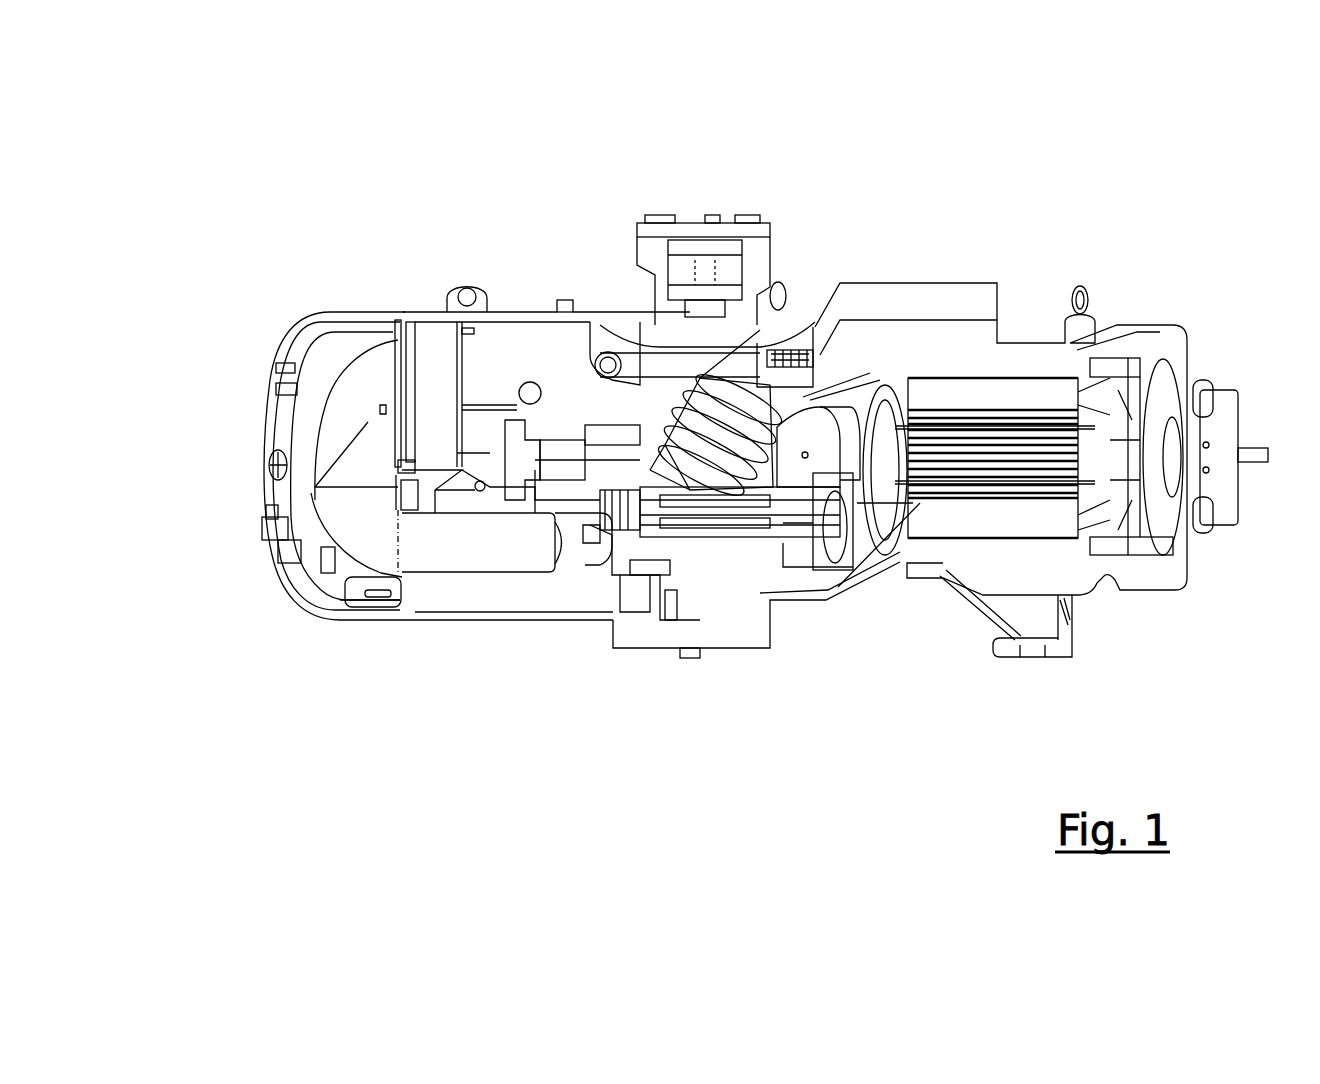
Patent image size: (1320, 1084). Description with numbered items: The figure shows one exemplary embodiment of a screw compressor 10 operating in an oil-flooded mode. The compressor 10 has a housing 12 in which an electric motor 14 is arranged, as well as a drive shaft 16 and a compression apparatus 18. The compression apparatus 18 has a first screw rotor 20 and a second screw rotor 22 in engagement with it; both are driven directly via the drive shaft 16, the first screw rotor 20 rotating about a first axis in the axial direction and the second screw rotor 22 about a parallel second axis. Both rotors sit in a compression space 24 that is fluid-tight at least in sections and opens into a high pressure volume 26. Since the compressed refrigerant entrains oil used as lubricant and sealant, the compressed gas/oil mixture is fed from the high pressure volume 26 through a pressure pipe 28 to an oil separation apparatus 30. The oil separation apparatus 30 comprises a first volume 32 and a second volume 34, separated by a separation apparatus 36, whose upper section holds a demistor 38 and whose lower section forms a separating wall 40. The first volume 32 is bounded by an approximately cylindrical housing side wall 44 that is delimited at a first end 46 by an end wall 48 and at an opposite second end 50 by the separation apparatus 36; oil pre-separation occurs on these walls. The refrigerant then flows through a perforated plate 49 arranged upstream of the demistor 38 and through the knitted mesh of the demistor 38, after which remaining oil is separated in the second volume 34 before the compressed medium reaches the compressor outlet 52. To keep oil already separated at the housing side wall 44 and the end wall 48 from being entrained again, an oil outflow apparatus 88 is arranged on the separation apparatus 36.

The screw compressor 10 is at (1168, 241).
The housing 12 is at (963, 337).
The electric motor 14 is at (963, 552).
The drive shaft 16 is at (832, 420).
The compression apparatus 18 is at (720, 520).
The first screw rotor 20 is at (723, 450).
The second screw rotor 22 is at (695, 418).
The compression space 24 is at (665, 500).
The high pressure volume 26 is at (668, 522).
The pressure pipe 28 is at (480, 560).
The oil separation apparatus 30 is at (394, 295).
The first volume 32 is at (300, 425).
The second volume 34 is at (533, 335).
The separation apparatus 36 is at (422, 336).
The demistor 38 is at (456, 390).
The separating wall 40 is at (392, 505).
The housing side wall 44 is at (347, 613).
The first end 46 is at (403, 612).
The end wall 48 is at (282, 510).
The perforated plate 49 is at (390, 365).
The second end 50 is at (280, 608).
The compressor outlet 52 is at (697, 225).
The oil outflow apparatus 88 is at (322, 560).